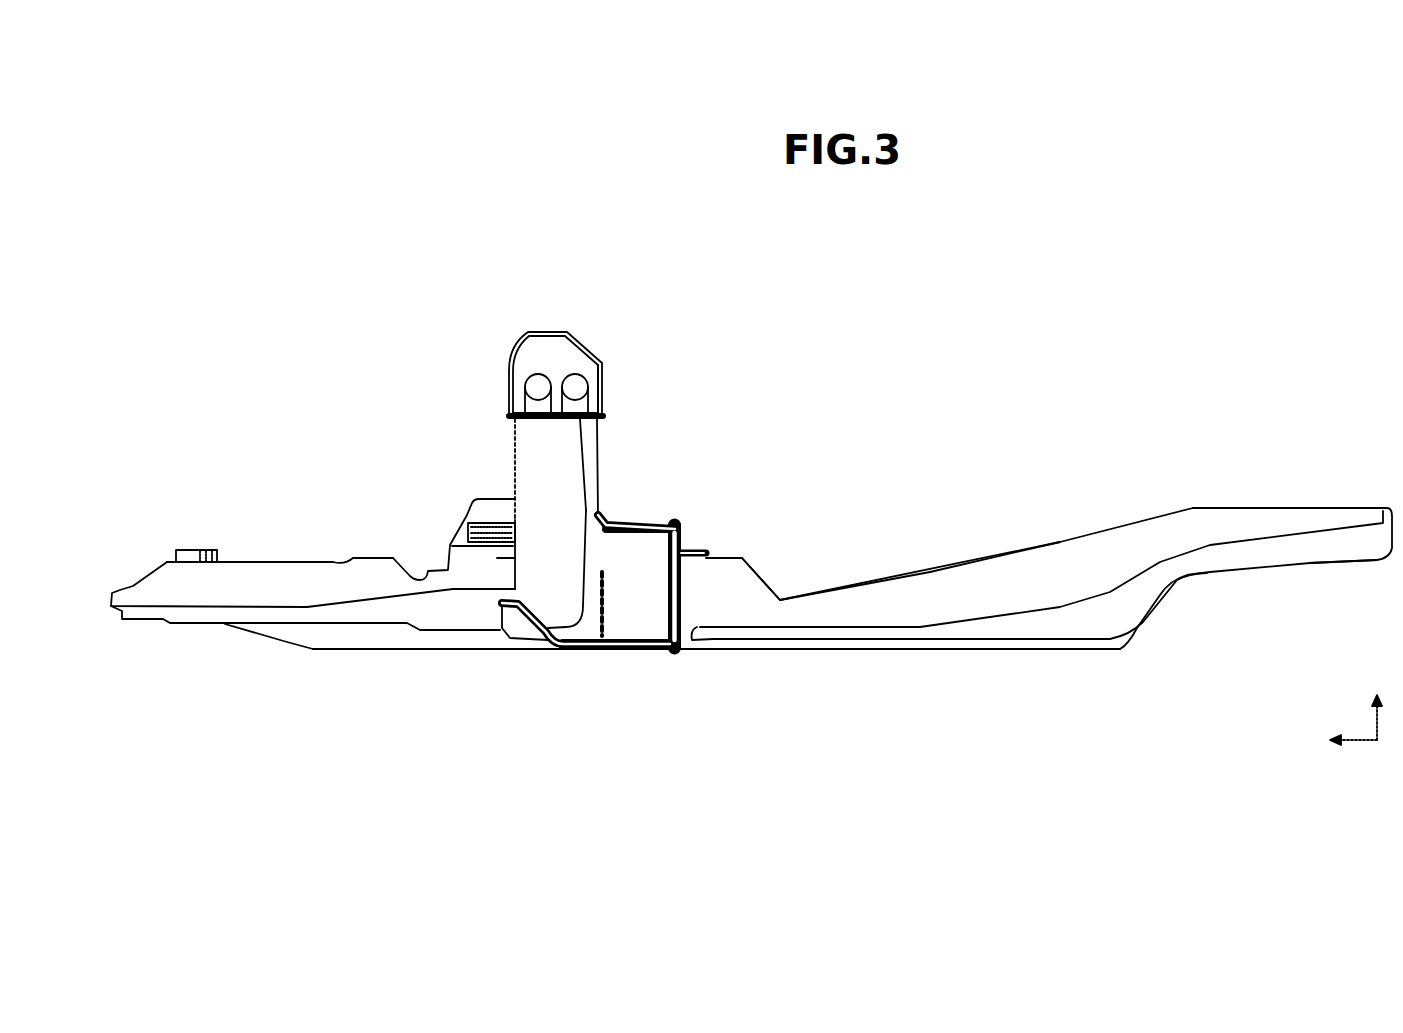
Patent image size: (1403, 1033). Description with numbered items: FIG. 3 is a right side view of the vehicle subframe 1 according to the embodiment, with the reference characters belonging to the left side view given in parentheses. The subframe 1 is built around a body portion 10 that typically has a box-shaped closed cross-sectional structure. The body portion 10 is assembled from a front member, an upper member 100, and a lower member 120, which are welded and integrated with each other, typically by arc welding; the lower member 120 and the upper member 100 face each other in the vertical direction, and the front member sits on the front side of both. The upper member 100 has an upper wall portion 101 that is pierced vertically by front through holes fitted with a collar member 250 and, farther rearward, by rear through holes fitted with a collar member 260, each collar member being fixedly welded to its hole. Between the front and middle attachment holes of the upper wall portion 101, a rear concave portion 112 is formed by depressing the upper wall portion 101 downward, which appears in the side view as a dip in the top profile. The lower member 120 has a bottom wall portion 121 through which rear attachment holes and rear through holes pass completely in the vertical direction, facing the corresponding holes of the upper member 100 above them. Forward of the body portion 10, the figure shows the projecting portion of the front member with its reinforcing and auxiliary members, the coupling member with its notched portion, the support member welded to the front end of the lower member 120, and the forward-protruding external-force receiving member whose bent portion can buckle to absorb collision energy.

The subframe 1 is at (354, 412).
The body portion 10 is at (338, 476).
The upper member 100 is at (278, 538).
The upper wall portion 101 is at (302, 561).
The rear concave portion 112 is at (420, 574).
The lower member 120 is at (290, 650).
The bottom wall portion 121 is at (337, 651).
The collar member 260 is at (184, 548).
The collar member 250 is at (485, 524).